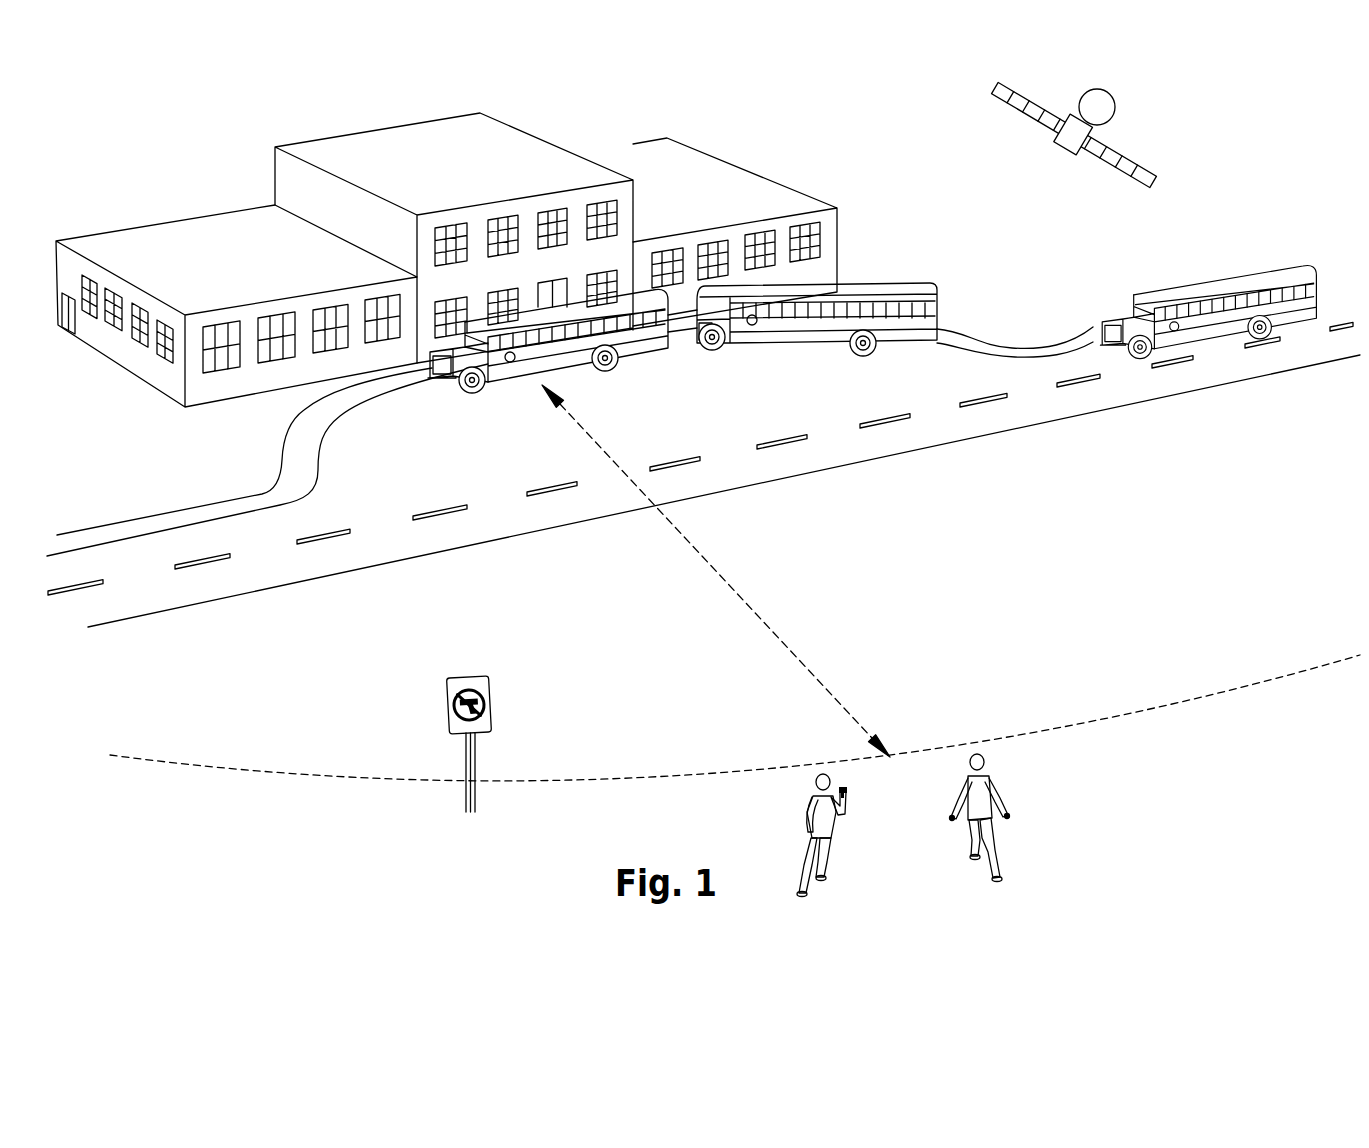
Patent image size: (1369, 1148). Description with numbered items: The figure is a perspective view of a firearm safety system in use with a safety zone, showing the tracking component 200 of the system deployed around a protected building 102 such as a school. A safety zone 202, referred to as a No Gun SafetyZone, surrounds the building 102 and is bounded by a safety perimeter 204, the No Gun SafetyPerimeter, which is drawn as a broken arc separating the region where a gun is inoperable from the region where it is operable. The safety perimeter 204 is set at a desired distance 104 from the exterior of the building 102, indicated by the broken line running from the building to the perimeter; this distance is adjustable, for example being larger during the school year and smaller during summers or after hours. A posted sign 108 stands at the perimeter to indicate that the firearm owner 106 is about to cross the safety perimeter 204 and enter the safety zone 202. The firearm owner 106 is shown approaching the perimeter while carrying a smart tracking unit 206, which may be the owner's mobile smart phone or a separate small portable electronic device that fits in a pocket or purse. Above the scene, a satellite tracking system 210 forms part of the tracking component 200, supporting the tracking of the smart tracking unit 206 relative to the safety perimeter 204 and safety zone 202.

The building 102 is at (516, 148).
The distance 104 is at (770, 612).
The firearm owner 106 is at (862, 855).
The posted sign 108 is at (506, 684).
The tracking component 200 is at (1256, 158).
The safety zone 202 is at (1023, 554).
The safety perimeter 204 is at (293, 791).
The smart tracking unit 206 is at (862, 786).
The satellite tracking system 210 is at (1132, 132).